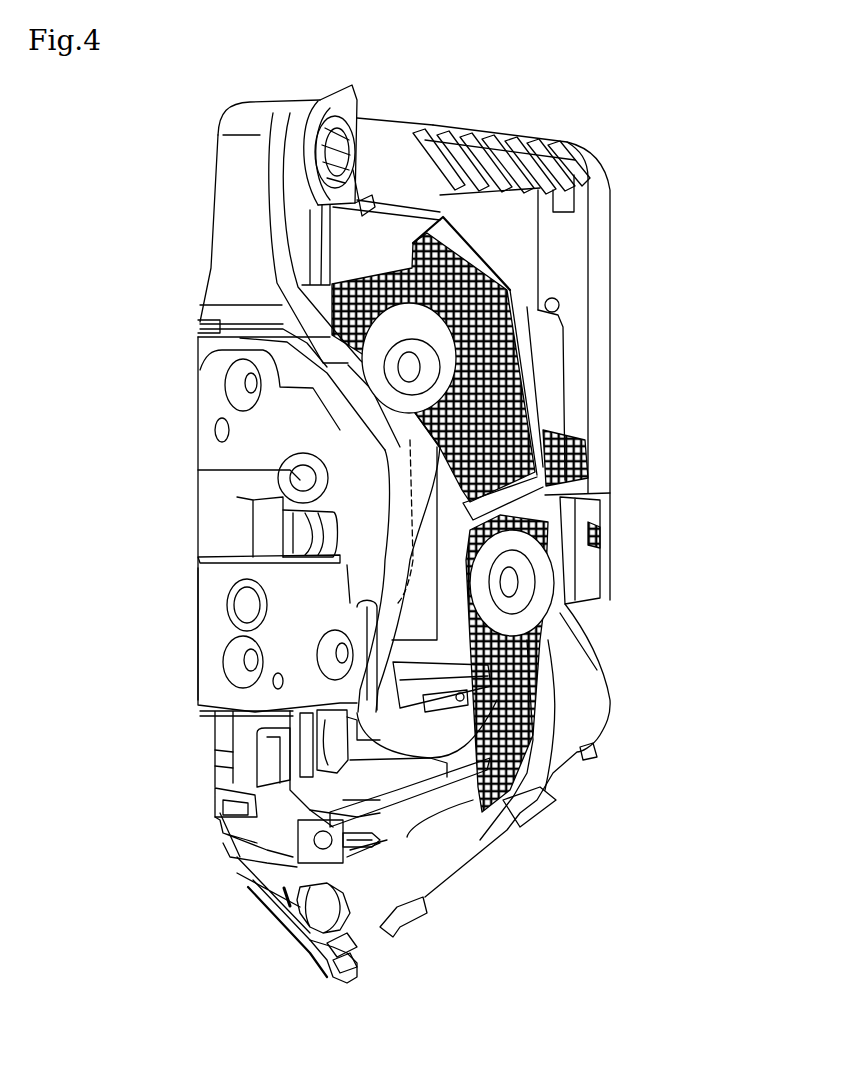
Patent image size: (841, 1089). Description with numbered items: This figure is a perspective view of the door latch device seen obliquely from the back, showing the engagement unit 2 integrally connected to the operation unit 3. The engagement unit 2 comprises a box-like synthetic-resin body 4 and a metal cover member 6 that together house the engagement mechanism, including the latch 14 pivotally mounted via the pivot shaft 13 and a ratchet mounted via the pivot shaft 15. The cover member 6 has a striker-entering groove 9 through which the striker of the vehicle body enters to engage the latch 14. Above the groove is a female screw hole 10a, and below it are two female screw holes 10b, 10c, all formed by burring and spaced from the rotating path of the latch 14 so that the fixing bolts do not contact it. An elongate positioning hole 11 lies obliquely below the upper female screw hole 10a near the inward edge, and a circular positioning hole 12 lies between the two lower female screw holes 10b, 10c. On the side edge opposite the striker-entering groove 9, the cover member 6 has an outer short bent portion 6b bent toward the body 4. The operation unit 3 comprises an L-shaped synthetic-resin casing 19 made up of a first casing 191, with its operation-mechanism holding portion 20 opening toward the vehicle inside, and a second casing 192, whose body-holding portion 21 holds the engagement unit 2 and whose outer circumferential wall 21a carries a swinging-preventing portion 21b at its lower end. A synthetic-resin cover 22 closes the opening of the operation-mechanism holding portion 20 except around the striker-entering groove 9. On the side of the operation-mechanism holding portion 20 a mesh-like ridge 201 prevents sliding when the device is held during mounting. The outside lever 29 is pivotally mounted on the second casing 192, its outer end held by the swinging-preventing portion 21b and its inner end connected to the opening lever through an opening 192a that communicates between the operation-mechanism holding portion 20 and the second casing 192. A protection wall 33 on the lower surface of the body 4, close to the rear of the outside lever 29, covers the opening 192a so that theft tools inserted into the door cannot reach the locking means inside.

The engagement unit 2 is at (190, 442).
The body 4 is at (200, 387).
The female screw hole 10a is at (251, 383).
The elongate positioning hole 11 is at (222, 428).
The pivot shaft 13 is at (278, 478).
The striker-entering groove 9 is at (237, 497).
The latch 14 is at (262, 528).
The cover member 6 is at (212, 579).
The pivot shaft 15 is at (240, 605).
The female screw hole 10b is at (251, 660).
The female screw hole 10c is at (342, 653).
The circular positioning hole 12 is at (275, 682).
The cover 22 is at (243, 724).
The protection wall 33 is at (293, 743).
The opening 192a is at (320, 772).
The mesh-like ridge 201 is at (585, 395).
The second casing 192 is at (489, 532).
The outer short bent portion 6b is at (600, 527).
The body-holding portion 21 is at (561, 658).
The outer circumferential wall 21a is at (508, 658).
The casing 19 is at (609, 638).
The operation-mechanism holding portion 20 is at (630, 701).
The first casing 191 is at (577, 670).
The operation unit 3 is at (600, 738).
The outside lever 29 is at (463, 740).
The swinging-preventing portion 21b is at (427, 747).